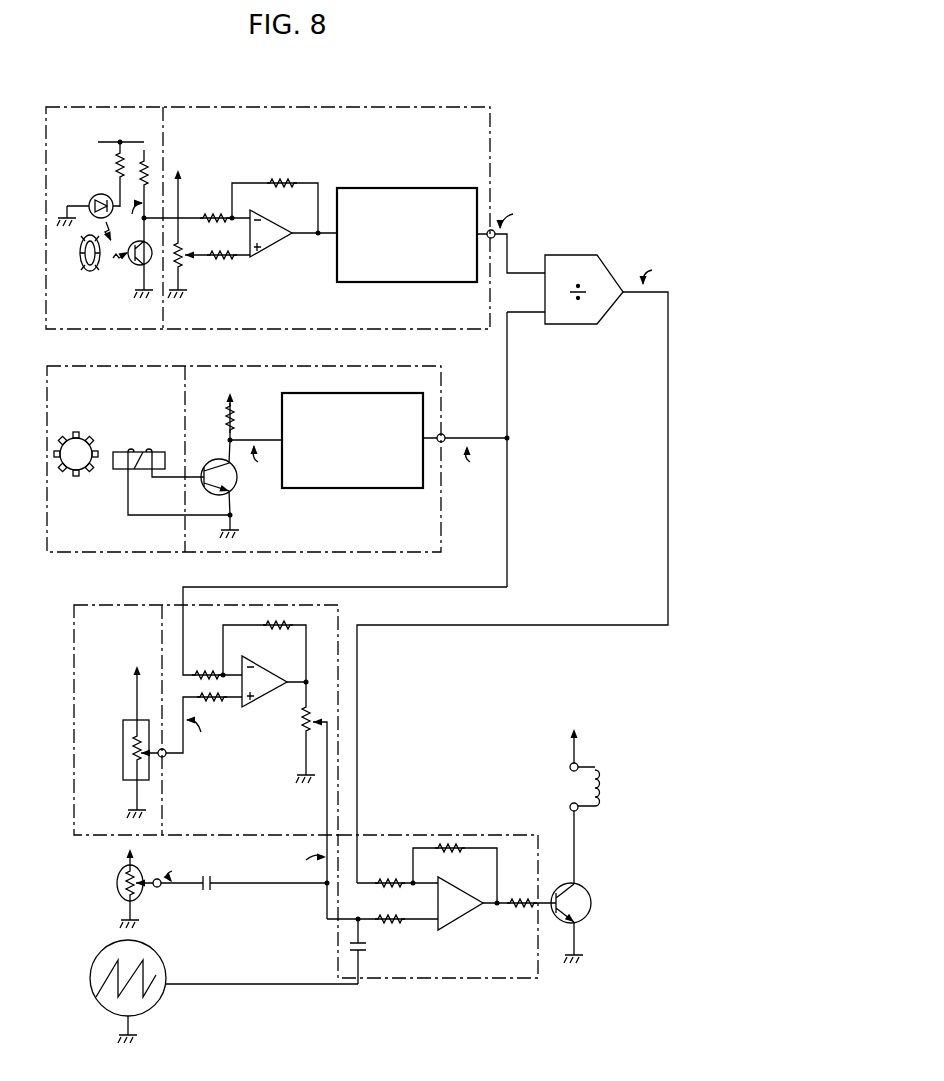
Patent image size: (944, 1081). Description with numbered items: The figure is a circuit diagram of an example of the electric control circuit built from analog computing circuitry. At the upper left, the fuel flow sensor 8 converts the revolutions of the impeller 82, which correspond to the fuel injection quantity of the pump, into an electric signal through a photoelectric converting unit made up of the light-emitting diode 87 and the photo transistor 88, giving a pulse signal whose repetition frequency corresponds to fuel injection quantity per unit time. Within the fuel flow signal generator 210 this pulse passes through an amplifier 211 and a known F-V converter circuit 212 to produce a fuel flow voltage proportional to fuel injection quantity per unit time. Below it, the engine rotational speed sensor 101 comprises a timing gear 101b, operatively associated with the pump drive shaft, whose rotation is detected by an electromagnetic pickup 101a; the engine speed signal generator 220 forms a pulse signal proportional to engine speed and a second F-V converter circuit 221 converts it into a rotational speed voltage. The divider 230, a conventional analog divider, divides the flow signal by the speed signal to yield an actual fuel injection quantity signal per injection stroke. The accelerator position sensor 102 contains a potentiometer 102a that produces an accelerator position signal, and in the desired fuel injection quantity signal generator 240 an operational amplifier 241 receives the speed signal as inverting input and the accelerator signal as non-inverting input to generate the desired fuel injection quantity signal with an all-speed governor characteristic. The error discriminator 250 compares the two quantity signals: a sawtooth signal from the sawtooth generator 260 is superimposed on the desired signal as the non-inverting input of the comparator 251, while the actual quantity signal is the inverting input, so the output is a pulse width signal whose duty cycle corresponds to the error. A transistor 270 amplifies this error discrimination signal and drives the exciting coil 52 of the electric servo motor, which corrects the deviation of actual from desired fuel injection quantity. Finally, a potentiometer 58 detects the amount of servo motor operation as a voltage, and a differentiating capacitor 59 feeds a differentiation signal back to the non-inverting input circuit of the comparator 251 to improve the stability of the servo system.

The fuel flow sensor 8 is at (150, 218).
The light-emitting diode 87 is at (96, 196).
The impeller 82 is at (85, 272).
The photo transistor 88 is at (134, 263).
The fuel flow signal generator 210 is at (492, 146).
The amplifier 211 is at (284, 256).
The F-V converter circuit 212 is at (375, 187).
The divider 230 is at (583, 253).
The engine rotational speed sensor 101 is at (73, 364).
The electromagnetic pickup 101a is at (124, 449).
The timing gear 101b is at (78, 480).
The engine speed signal generator 220 is at (255, 364).
The F-V converter circuit 221 is at (382, 392).
The accelerator position sensor 102 is at (102, 603).
The potentiometer 102a is at (123, 733).
The desired fuel injection quantity signal generator 240 is at (337, 628).
The operational amplifier 241 is at (263, 708).
The error discriminator 250 is at (422, 835).
The comparator 251 is at (468, 910).
The sawtooth generator 260 is at (167, 977).
The potentiometer 58 is at (117, 880).
The differentiating capacitor 59 is at (207, 890).
The exciting coil 52 is at (600, 790).
The transistor 270 is at (591, 903).